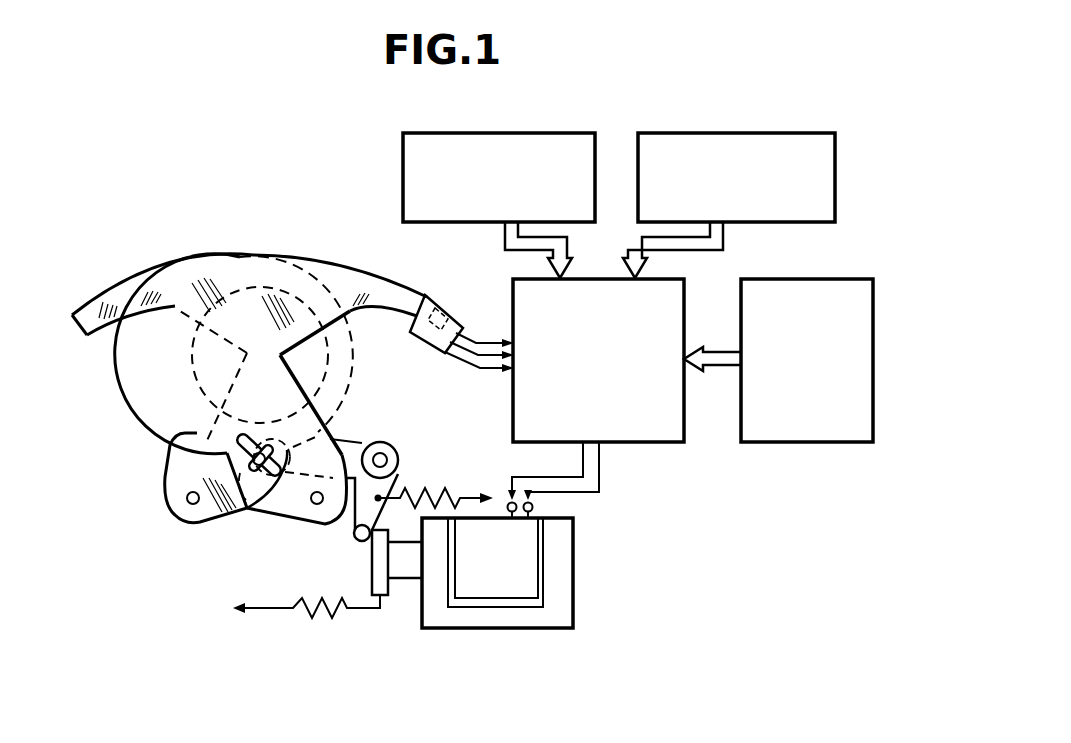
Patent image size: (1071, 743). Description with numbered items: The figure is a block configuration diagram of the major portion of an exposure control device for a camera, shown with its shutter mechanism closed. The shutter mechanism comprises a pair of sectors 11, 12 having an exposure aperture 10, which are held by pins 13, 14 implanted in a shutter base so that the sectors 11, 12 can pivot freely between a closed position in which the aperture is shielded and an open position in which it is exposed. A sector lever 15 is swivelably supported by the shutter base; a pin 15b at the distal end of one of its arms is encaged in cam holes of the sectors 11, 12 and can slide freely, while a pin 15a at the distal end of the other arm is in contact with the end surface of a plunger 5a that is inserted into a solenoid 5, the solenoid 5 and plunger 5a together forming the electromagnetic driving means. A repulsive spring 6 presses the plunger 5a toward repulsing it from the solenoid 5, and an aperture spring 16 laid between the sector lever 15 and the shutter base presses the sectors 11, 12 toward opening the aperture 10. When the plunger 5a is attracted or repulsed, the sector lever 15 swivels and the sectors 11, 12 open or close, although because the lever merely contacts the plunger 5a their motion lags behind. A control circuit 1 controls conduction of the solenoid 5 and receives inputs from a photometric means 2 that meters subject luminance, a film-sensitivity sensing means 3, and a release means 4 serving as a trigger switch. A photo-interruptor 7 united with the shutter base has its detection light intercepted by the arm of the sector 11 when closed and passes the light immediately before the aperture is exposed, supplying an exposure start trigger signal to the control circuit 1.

The control circuit 1 is at (518, 296).
The photometric means 2 is at (403, 155).
The film-sensitivity sensing means 3 is at (710, 134).
The release means 4 is at (748, 294).
The solenoid 5 is at (506, 636).
The plunger 5a is at (408, 568).
The repulsive spring 6 is at (315, 615).
The photo-interruptor 7 is at (456, 306).
The exposure aperture 10 is at (192, 372).
The sector 11 is at (350, 282).
The sector 12 is at (136, 286).
The pin 13 is at (315, 506).
The pin 14 is at (185, 503).
The sector lever 15 is at (383, 442).
The pin 15a is at (364, 541).
The pin 15b is at (250, 512).
The aperture spring 16 is at (440, 498).